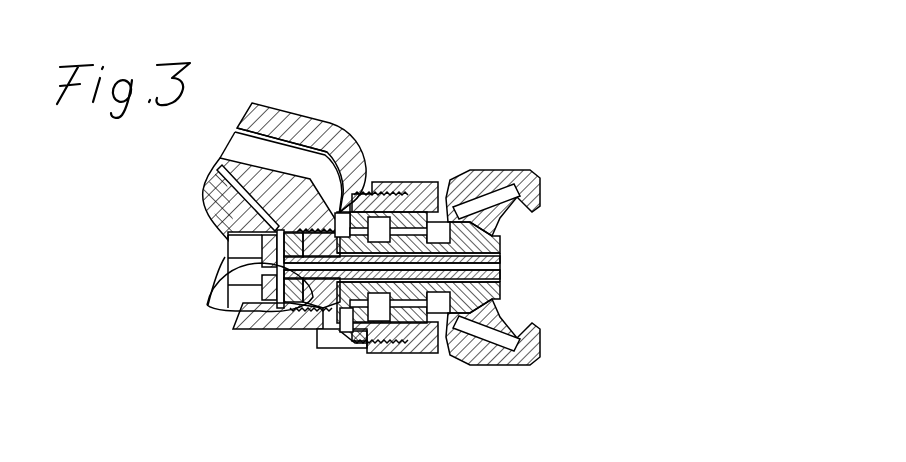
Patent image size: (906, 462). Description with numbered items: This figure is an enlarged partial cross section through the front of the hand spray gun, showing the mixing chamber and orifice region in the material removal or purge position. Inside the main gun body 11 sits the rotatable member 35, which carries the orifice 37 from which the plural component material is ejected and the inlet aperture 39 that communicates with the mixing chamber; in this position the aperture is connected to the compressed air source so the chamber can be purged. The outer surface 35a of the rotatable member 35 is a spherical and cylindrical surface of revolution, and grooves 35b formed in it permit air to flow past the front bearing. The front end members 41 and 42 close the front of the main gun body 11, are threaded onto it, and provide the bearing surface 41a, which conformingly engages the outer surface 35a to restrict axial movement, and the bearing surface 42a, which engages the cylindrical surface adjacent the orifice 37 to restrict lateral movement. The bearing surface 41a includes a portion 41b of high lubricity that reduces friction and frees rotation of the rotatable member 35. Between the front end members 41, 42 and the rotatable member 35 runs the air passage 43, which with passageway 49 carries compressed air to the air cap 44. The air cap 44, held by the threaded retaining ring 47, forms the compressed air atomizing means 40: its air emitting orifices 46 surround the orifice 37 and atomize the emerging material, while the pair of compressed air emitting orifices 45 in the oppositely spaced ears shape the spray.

The main gun body 11 is at (287, 152).
The passageway 49 is at (293, 113).
The rotatable member 35 is at (266, 250).
The outer surface 35a is at (250, 330).
The grooves 35b is at (452, 342).
The orifice 37 is at (502, 268).
The aperture 39 is at (298, 330).
The compressed air atomizing means 40 is at (552, 390).
The front end member 41 is at (307, 330).
The bearing surface 41a is at (243, 327).
The high lubricity portion 41b is at (220, 282).
The front end member 42 is at (420, 190).
The bearing surface 42a is at (468, 195).
The air passage 43 is at (373, 353).
The air cap 44 is at (517, 182).
The compressed air emitting orifices 45 is at (519, 200).
The air emitting orifices 46 is at (502, 262).
The threaded retaining ring 47 is at (388, 183).